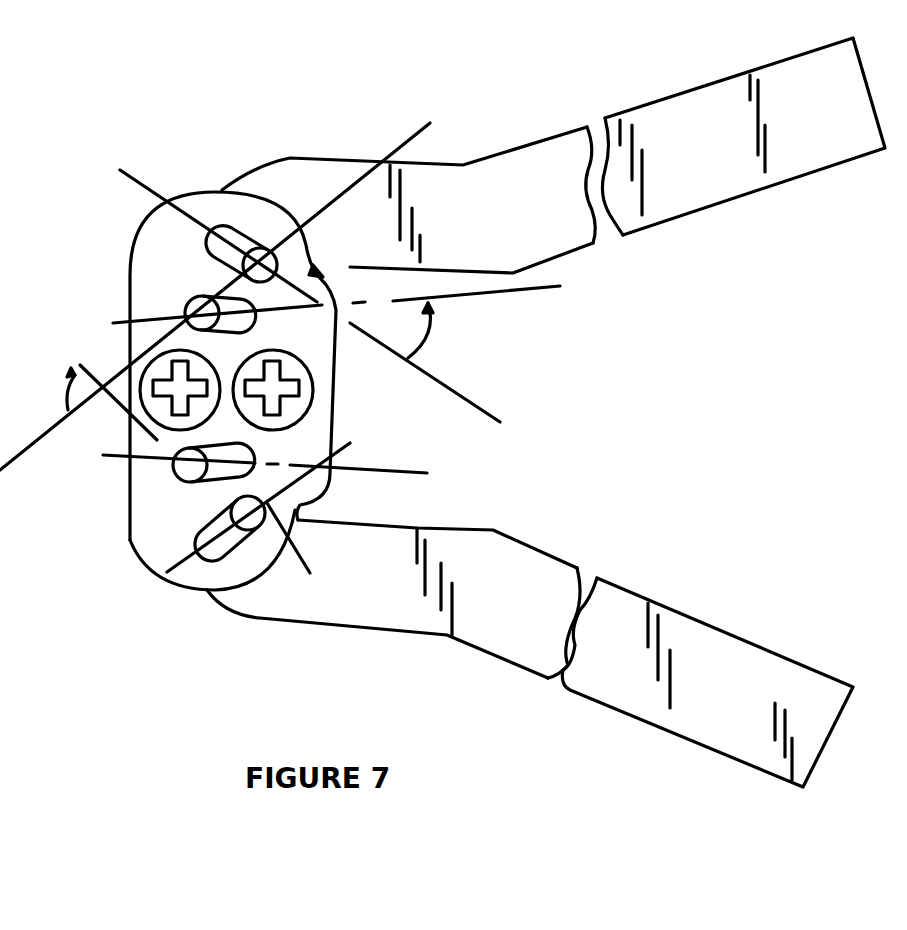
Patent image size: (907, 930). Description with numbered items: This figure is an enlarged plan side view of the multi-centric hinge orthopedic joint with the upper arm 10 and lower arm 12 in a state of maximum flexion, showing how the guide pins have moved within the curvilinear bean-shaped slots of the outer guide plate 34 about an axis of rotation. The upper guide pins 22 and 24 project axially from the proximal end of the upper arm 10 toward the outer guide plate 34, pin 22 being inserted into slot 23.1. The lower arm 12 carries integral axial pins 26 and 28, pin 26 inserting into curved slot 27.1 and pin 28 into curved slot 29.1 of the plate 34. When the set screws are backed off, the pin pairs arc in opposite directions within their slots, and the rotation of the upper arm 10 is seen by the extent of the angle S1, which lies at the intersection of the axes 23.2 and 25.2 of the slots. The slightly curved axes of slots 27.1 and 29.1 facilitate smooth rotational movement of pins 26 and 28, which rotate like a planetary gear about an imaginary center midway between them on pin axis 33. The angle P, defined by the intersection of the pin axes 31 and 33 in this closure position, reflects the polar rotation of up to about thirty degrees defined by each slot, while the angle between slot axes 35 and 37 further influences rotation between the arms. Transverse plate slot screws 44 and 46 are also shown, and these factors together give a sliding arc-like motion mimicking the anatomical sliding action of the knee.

The upper arm 10 is at (780, 92).
The lower arm 12 is at (742, 665).
The upper guide pin 22 is at (407, 190).
The curvilinear bean-shaped slot 23.1 is at (238, 238).
The slot axis 23.2 is at (495, 408).
The upper guide pin 24 is at (129, 262).
The slot axis 25.2 is at (553, 290).
The axial pin 26 is at (160, 458).
The curved slot 27.1 is at (283, 492).
The axial pin 28 is at (300, 538).
The curved slot 29.1 is at (213, 558).
The pin axis 31 is at (433, 108).
The pin axis 33 is at (82, 368).
The outer guide plate 34 is at (143, 498).
The slot axis 35 is at (147, 573).
The slot axis 37 is at (427, 473).
The transverse plate slot screw 44 is at (285, 507).
The transverse plate slot screw 46 is at (323, 386).
The angle P is at (48, 391).
The angle S1 is at (439, 337).